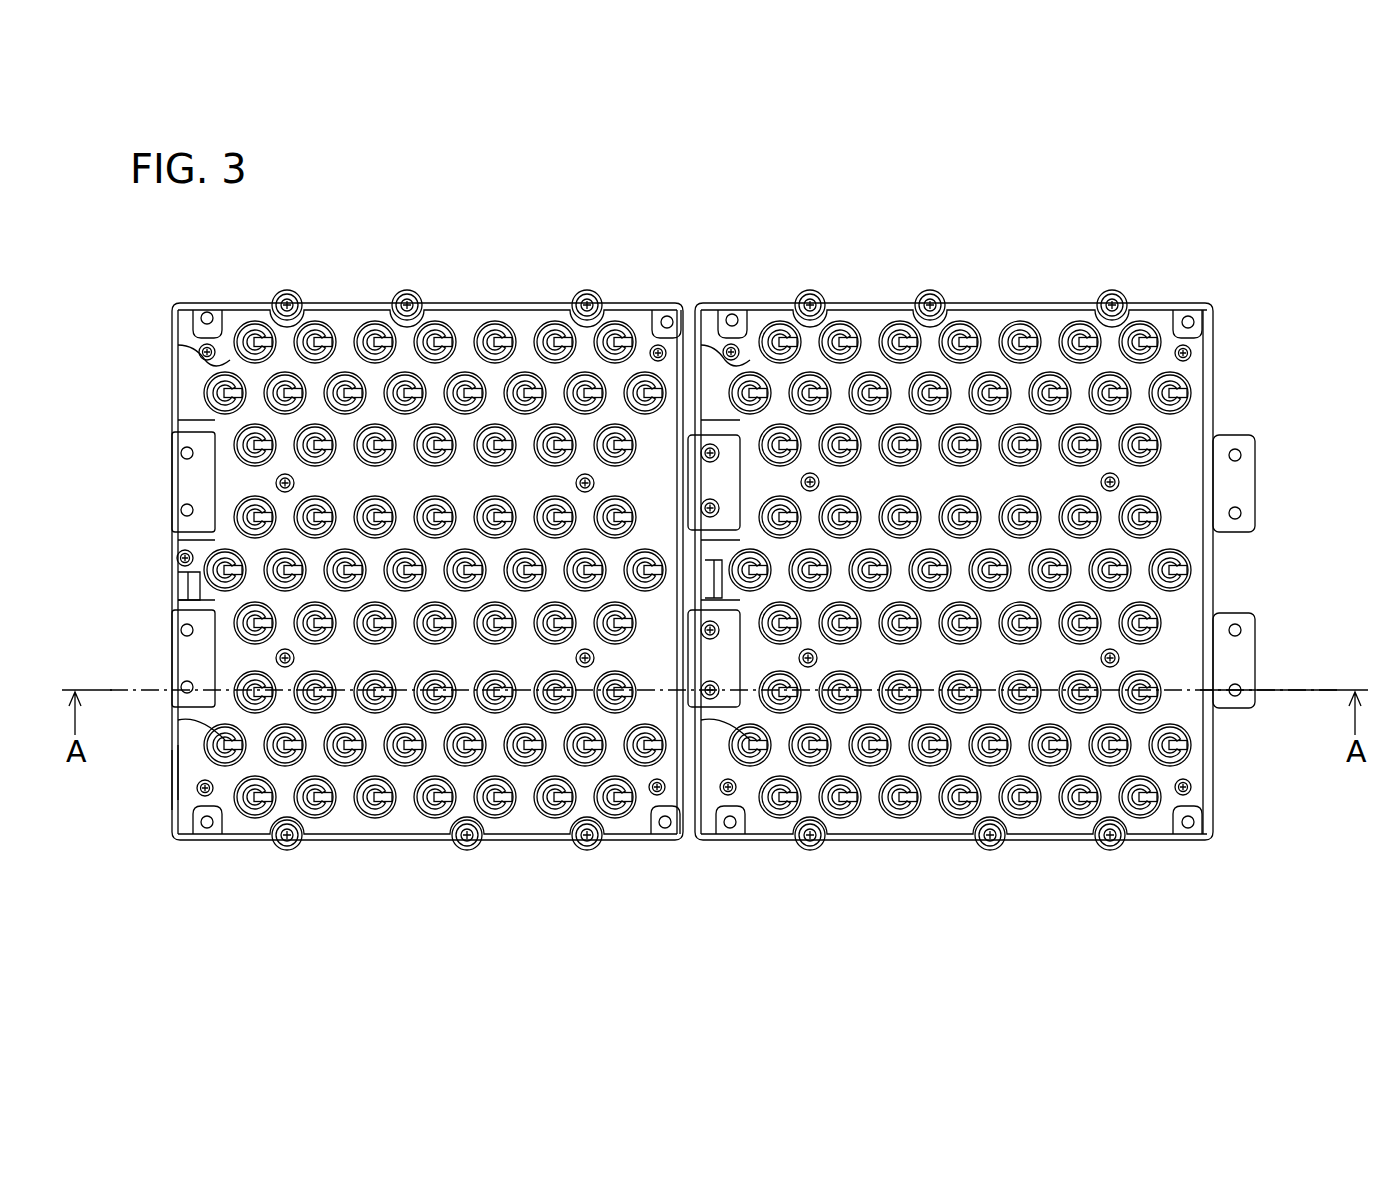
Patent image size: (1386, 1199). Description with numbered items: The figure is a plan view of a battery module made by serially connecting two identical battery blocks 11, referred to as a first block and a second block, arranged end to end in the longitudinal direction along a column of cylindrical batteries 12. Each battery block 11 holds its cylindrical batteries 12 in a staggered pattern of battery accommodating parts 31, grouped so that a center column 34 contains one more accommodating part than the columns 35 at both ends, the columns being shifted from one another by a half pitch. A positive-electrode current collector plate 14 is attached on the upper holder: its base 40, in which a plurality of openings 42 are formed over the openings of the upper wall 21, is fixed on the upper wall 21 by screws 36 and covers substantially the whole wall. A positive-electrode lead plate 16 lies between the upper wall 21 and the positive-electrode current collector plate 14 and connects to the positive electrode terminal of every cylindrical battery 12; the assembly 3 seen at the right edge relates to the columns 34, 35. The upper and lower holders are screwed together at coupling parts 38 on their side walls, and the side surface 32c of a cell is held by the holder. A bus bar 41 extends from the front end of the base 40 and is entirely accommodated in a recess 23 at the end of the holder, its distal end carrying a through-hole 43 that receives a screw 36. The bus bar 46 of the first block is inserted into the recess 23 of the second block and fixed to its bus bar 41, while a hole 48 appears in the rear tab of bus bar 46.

The battery module assembly 3 is at (1252, 569).
The battery block 11 is at (380, 597).
The cylindrical battery 12 is at (316, 335).
The positive-electrode current collector plate 14 is at (526, 325).
The positive-electrode lead plate 16 is at (438, 340).
The upper wall 21 is at (207, 848).
The recess 23 is at (213, 658).
The battery accommodating part 31 is at (1130, 335).
The cell opening 32c is at (256, 808).
The center column 34 is at (1205, 575).
The column at both ends 35 is at (1194, 629).
The screw 36 is at (713, 437).
The coupling part 38 is at (466, 848).
The base 40 is at (207, 312).
The bus bar 41 is at (146, 468).
The opening 42 is at (252, 333).
The through-hole 43 is at (181, 453).
The bus bar 46 is at (1052, 457).
The tab hole 48 is at (1242, 455).